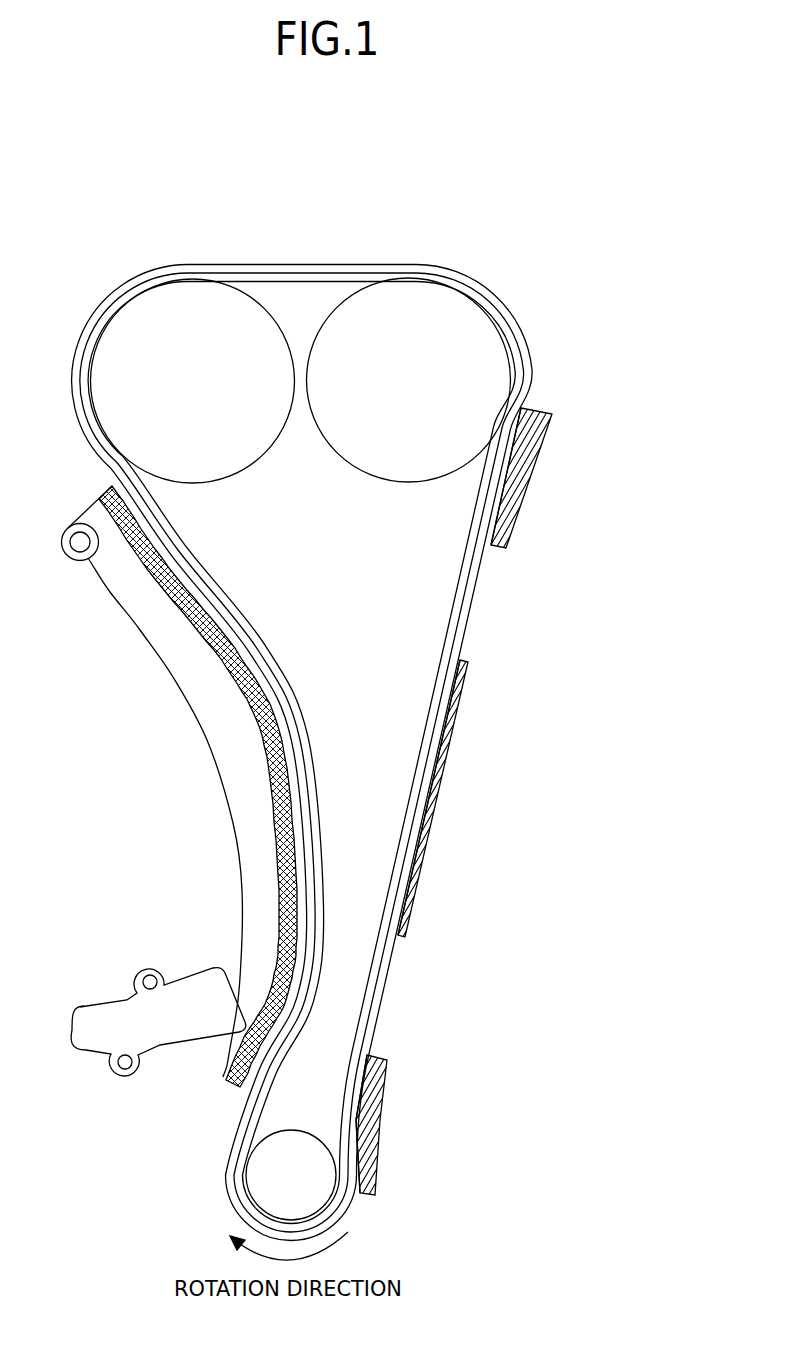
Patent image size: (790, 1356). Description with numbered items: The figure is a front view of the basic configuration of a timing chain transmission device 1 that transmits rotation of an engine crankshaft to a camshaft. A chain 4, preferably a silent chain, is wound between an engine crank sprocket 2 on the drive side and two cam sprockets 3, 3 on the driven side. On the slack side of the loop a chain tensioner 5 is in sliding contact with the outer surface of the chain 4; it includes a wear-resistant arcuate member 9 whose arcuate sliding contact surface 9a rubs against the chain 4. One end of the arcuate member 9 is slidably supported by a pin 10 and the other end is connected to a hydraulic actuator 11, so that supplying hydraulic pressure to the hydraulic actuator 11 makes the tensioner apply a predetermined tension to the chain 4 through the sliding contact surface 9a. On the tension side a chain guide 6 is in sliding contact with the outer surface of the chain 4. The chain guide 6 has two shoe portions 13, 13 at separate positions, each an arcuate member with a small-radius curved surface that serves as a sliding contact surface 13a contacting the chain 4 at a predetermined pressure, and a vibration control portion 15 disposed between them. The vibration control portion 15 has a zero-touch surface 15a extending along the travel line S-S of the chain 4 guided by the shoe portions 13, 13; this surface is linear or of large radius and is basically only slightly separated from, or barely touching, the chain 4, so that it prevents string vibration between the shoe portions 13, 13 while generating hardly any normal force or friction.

The chain transmission device 1 is at (441, 155).
The engine crank sprocket 2 is at (252, 1178).
The cam sprocket 3 is at (142, 303).
The chain 4 is at (468, 610).
The chain tensioner 5 is at (173, 765).
The chain guide 6 is at (463, 767).
The arcuate member 9 is at (234, 792).
The sliding contact surface 9a is at (247, 657).
The pin 10 is at (82, 539).
The hydraulic actuator 11 is at (170, 1037).
The shoe portion 13 is at (546, 441).
The sliding contact surface 13a is at (487, 496).
The vibration control portion 15 is at (459, 700).
The zero-touch surface 15a is at (442, 722).
The travel line S is at (462, 575).